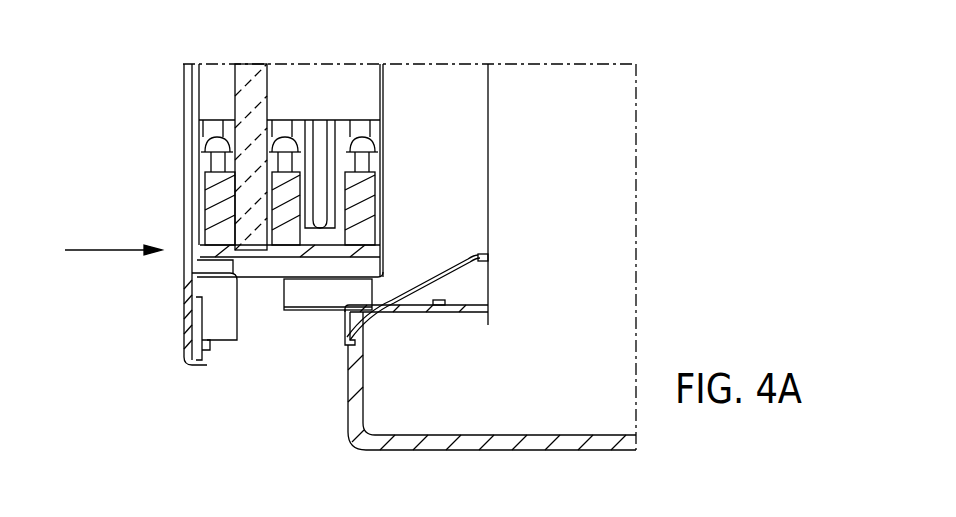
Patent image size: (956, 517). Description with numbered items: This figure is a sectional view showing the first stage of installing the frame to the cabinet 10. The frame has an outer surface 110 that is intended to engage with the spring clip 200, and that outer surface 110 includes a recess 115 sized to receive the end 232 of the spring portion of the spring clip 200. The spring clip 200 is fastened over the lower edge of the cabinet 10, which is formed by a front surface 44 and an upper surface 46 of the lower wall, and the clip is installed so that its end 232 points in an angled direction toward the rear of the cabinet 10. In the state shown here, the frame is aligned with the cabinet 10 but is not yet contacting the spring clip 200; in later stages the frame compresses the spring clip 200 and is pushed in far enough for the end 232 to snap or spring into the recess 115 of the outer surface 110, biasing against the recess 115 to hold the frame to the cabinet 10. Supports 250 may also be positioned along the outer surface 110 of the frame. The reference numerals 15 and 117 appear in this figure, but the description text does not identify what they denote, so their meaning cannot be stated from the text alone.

The cabinet 10 is at (594, 447).
The housing wall boundary 15 is at (452, 128).
The front surface 44 is at (348, 333).
The upper surface 46 is at (388, 313).
The outer surface 110 is at (290, 260).
The recess 115 is at (340, 248).
The tongue 117 is at (225, 332).
The spring clip 200 is at (536, 349).
The end 232 is at (488, 257).
The supports 250 is at (298, 310).